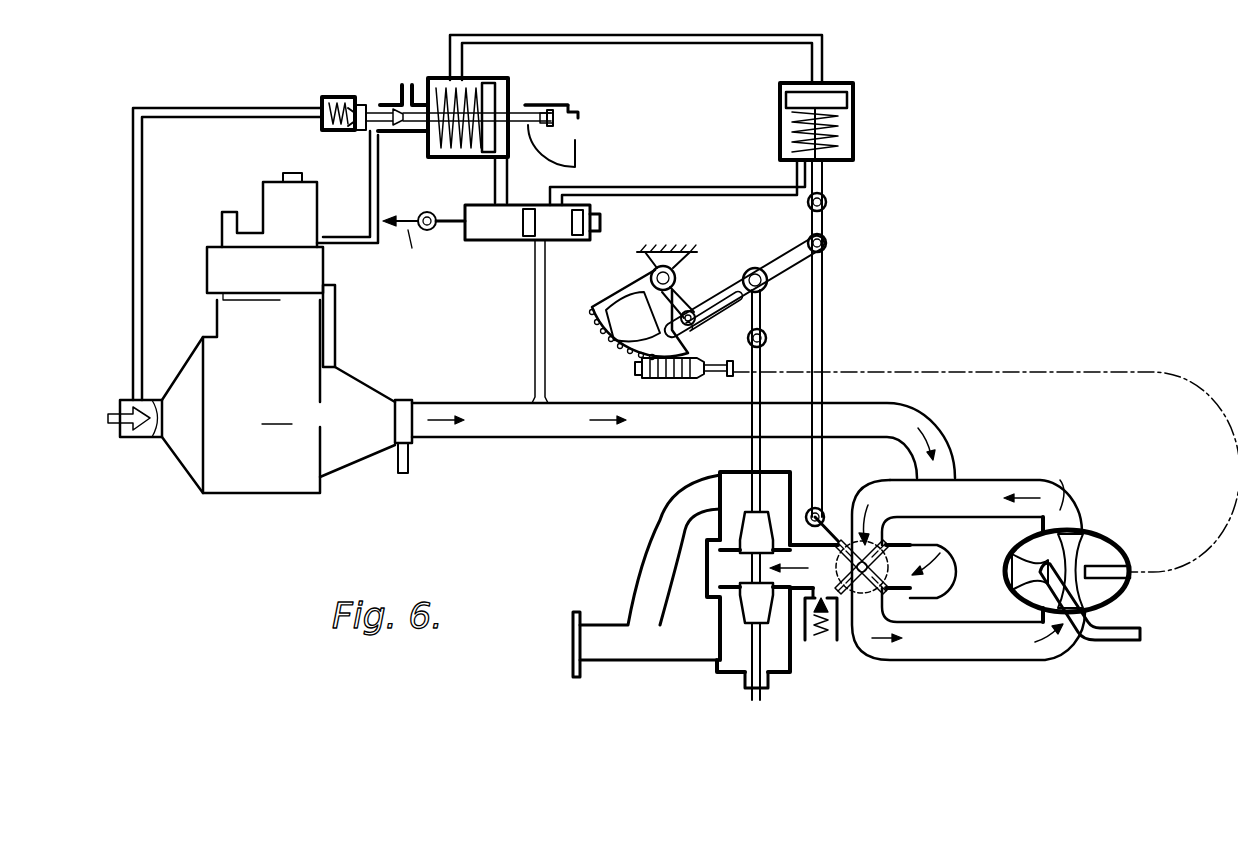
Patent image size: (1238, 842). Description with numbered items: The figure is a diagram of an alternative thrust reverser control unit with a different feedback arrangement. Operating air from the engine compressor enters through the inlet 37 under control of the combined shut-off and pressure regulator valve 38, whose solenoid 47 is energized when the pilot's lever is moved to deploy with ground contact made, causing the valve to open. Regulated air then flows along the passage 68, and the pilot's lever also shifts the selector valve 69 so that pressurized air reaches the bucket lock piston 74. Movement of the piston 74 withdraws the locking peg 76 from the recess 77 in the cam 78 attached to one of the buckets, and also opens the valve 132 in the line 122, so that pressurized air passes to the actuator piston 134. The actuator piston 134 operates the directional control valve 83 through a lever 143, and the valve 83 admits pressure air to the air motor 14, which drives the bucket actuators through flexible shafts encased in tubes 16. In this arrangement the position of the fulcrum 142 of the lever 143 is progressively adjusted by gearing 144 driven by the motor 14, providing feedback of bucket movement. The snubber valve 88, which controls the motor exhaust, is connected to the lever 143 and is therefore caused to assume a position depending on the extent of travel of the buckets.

The air motor 14 is at (1094, 542).
The tubes 16 is at (971, 371).
The inlet 37 is at (138, 437).
The combined shut-off and pressure regulator valve 38 is at (287, 370).
The solenoid 47 is at (272, 185).
The passage 68 is at (606, 437).
The selector valve 69 is at (520, 232).
The piston 74 is at (490, 86).
The locking peg 76 is at (536, 112).
The recess 77 is at (560, 108).
The cam 78 is at (551, 158).
The directional control valve 83 is at (850, 597).
The snubber valve 88 is at (744, 600).
The line 122 is at (237, 108).
The valve 132 is at (361, 110).
The actuator piston 134 is at (855, 97).
The fulcrum 142 is at (693, 325).
The lever 143 is at (779, 262).
The gearing 144 is at (637, 357).